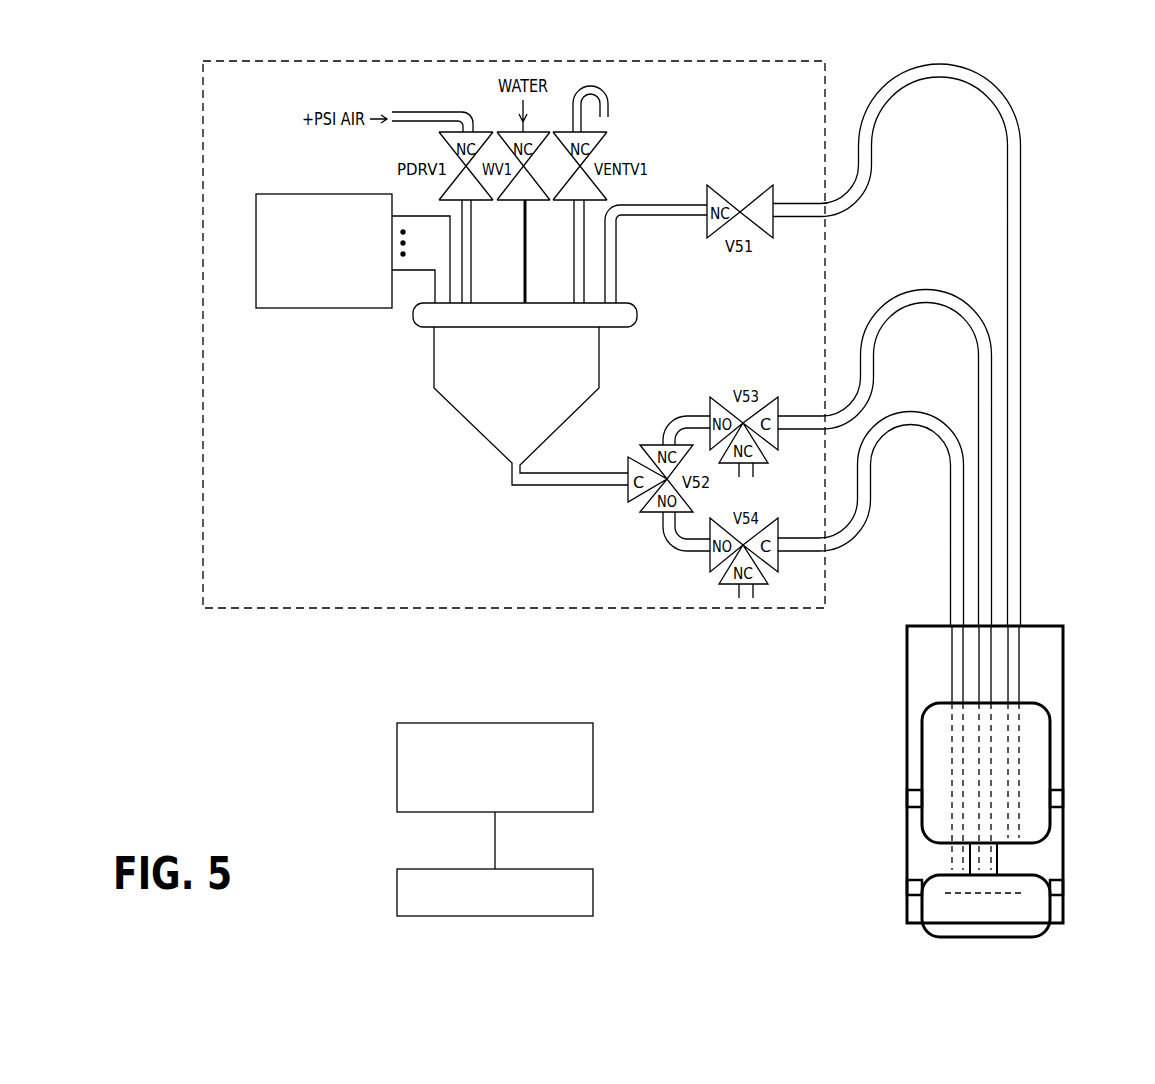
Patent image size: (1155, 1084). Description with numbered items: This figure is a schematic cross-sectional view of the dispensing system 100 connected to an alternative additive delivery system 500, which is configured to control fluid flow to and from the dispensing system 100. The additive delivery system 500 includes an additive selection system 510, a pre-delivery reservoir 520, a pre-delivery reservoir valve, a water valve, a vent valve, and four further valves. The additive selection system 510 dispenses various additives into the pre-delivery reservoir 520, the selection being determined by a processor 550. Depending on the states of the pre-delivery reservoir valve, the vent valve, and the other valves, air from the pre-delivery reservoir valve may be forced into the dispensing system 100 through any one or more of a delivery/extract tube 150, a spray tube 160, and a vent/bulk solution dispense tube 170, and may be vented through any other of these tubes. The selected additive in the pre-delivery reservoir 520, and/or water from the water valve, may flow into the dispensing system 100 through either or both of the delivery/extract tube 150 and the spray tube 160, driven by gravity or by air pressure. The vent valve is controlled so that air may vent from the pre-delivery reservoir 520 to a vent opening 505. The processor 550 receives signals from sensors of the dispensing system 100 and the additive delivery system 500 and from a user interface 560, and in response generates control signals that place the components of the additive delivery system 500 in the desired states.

The dispensing system 100 is at (1050, 560).
The delivery/extract tube 150 is at (932, 425).
The spray tube 160 is at (940, 303).
The vent/bulk solution dispense tube 170 is at (968, 80).
The additive delivery system 500 is at (366, 608).
The vent opening 505 is at (660, 100).
The additive selection system 510 is at (333, 308).
The pre-delivery reservoir 520 is at (470, 427).
The processor 550 is at (593, 757).
The user interface 560 is at (593, 877).